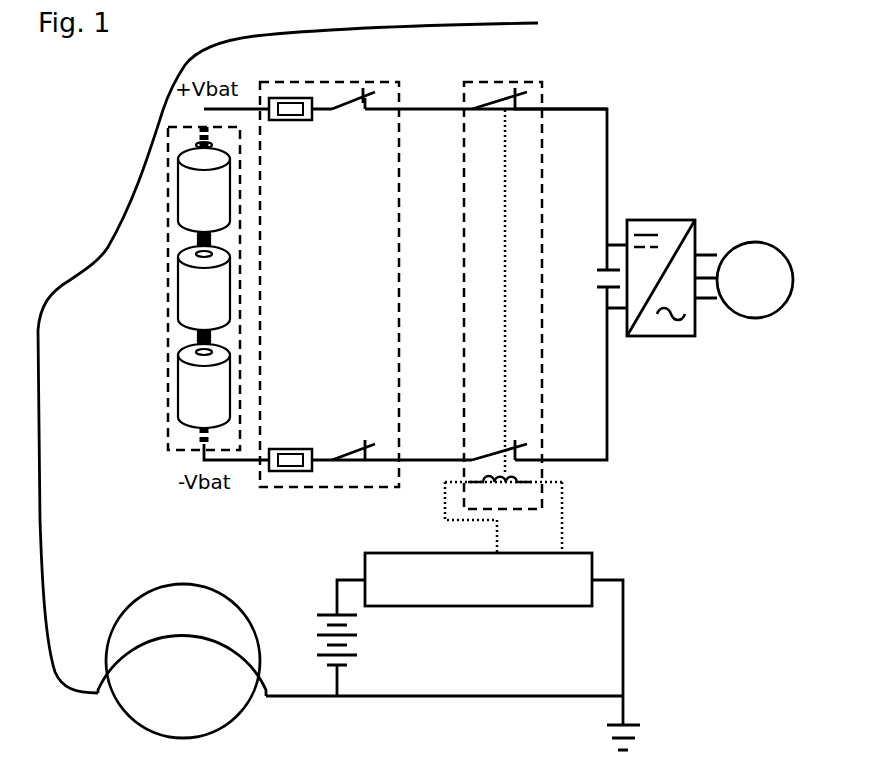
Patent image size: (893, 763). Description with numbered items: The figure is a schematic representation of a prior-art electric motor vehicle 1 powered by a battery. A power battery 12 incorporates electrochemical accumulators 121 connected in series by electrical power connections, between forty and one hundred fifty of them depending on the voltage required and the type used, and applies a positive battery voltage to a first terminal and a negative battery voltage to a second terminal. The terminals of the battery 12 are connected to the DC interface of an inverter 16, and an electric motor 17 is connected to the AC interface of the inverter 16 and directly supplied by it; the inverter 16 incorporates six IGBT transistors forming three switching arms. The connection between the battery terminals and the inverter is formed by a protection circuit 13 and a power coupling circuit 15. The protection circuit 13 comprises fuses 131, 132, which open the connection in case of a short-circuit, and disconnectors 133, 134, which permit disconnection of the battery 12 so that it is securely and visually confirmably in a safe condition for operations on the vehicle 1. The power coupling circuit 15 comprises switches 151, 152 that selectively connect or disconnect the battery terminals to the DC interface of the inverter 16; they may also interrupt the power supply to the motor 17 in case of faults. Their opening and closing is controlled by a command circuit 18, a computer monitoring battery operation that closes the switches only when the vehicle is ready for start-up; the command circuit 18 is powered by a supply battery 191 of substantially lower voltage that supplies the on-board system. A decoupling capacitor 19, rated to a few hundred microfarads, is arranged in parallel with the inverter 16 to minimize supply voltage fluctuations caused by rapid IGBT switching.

The vehicle 1 is at (658, 133).
The power battery 12 is at (172, 288).
The electrochemical accumulators 121 is at (223, 208).
The protection circuit 13 is at (329, 324).
The fuse 131 is at (289, 124).
The fuse 132 is at (290, 447).
The disconnector 133 is at (360, 120).
The disconnector 134 is at (357, 425).
The power coupling circuit 15 is at (512, 317).
The switch 151 is at (487, 122).
The switch 152 is at (487, 447).
The inverter 16 is at (660, 337).
The electric motor 17 is at (768, 290).
The command circuit 18 is at (491, 589).
The decoupling capacitor 19 is at (590, 265).
The supply battery 191 is at (318, 615).